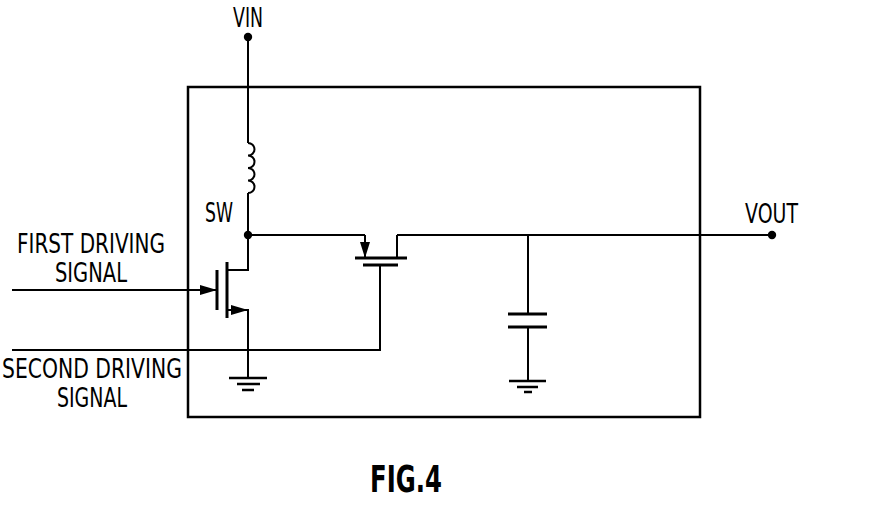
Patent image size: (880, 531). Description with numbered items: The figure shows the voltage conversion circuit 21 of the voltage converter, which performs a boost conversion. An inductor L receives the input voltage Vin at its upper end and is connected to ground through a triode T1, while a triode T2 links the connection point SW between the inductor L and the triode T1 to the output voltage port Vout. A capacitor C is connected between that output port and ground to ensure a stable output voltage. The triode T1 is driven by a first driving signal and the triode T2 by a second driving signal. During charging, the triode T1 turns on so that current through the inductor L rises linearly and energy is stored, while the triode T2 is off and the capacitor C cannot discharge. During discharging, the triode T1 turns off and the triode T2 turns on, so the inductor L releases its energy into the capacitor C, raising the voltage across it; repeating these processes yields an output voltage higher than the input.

The voltage conversion circuit 21 is at (555, 87).
The inductor L is at (264, 168).
The capacitor C is at (537, 313).
The triode T1 is at (149, 312).
The triode T2 is at (397, 264).